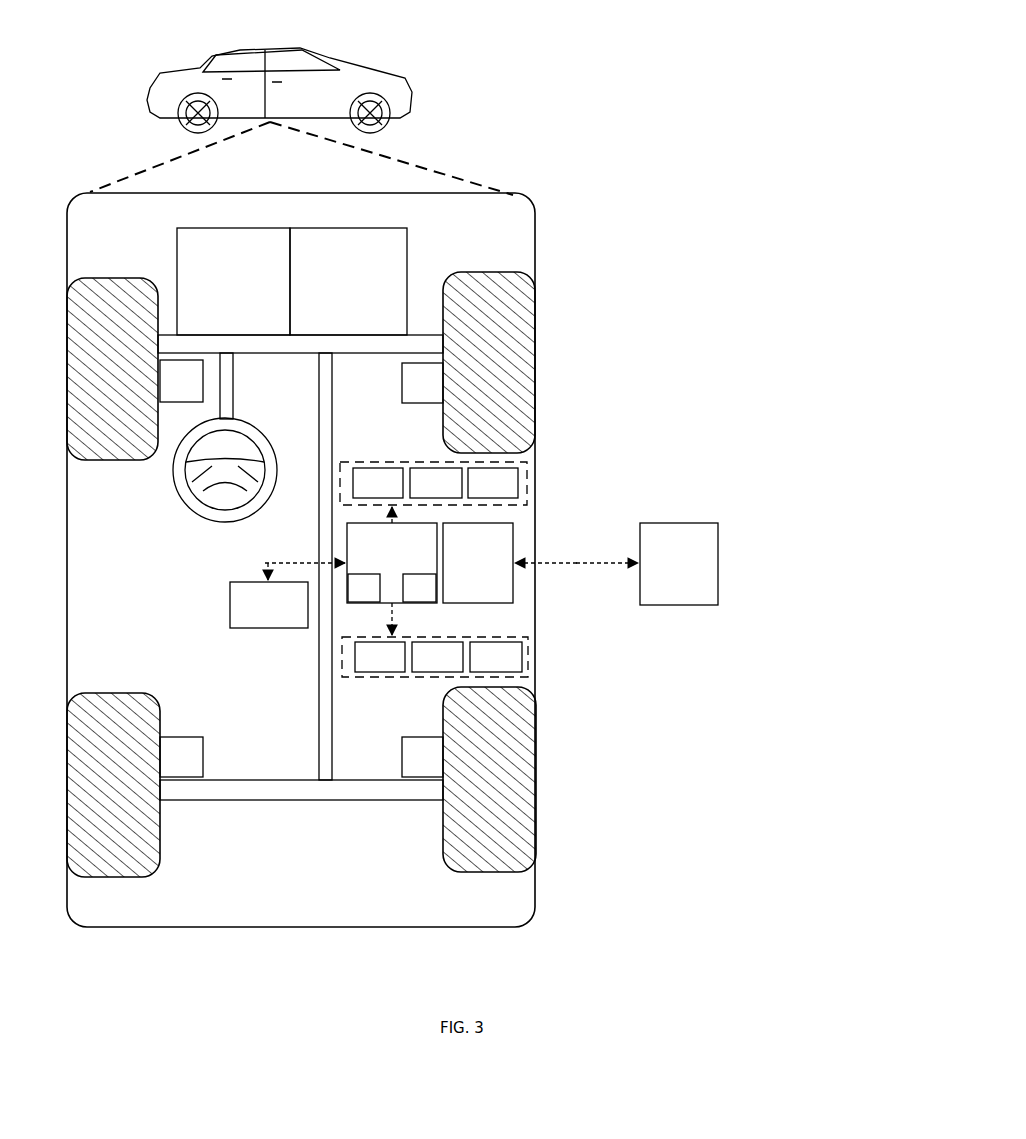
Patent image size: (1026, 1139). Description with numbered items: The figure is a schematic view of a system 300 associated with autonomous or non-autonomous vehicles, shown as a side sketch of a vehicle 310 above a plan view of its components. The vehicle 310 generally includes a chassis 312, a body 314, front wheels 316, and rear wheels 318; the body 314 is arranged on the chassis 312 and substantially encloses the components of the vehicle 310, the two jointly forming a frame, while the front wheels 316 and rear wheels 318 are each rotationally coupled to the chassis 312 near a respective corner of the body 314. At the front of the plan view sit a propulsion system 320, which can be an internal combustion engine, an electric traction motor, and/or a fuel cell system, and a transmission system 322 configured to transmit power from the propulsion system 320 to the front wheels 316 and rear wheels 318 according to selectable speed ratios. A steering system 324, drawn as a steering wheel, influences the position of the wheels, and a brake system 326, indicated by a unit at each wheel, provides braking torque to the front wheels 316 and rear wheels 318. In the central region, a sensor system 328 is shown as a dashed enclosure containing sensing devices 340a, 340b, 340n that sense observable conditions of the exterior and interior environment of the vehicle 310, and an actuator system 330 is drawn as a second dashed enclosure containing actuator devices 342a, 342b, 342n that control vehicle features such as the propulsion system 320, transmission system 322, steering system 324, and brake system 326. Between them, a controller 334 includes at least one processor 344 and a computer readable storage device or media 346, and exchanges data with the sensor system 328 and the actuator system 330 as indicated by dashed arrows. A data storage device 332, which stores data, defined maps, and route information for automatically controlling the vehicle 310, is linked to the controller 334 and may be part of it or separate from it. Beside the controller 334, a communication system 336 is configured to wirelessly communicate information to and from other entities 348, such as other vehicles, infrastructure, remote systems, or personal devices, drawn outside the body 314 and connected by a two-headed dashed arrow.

The system 300 is at (838, 48).
The vehicle 310 is at (150, 100).
The chassis 312 is at (318, 718).
The body 314 is at (67, 545).
The front wheels 316 is at (112, 278).
The rear wheels 318 is at (130, 877).
The propulsion system 320 is at (233, 281).
The transmission system 322 is at (348, 281).
The steering system 324 is at (262, 380).
The brake system 326 is at (301, 568).
The sensor system 328 is at (433, 458).
The actuator system 330 is at (435, 676).
The data storage device 332 is at (269, 605).
The controller 334 is at (392, 563).
The communication system 336 is at (478, 563).
The sensing device 340a is at (378, 483).
The sensing device 340b is at (436, 483).
The sensing device 340n is at (493, 483).
The actuator device 342a is at (380, 657).
The actuator device 342b is at (437, 657).
The actuator device 342n is at (496, 657).
The processor 344 is at (364, 588).
The computer readable storage device or media 346 is at (419, 588).
The other entities 348 is at (679, 564).